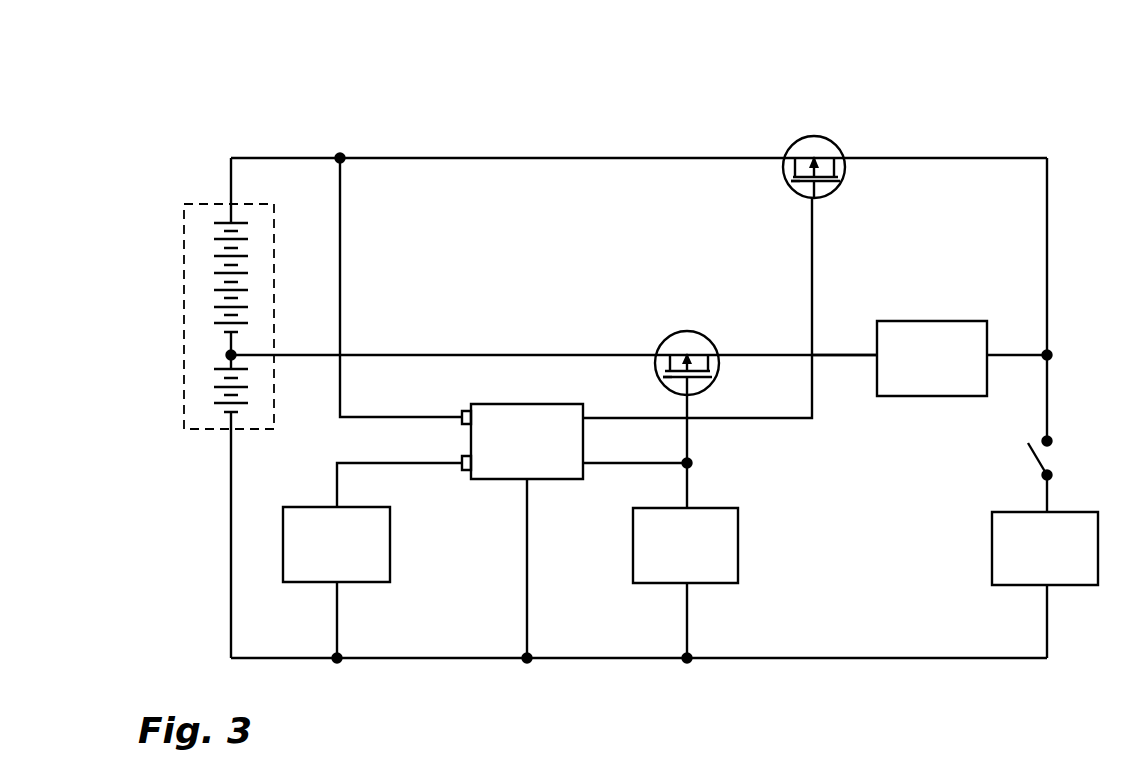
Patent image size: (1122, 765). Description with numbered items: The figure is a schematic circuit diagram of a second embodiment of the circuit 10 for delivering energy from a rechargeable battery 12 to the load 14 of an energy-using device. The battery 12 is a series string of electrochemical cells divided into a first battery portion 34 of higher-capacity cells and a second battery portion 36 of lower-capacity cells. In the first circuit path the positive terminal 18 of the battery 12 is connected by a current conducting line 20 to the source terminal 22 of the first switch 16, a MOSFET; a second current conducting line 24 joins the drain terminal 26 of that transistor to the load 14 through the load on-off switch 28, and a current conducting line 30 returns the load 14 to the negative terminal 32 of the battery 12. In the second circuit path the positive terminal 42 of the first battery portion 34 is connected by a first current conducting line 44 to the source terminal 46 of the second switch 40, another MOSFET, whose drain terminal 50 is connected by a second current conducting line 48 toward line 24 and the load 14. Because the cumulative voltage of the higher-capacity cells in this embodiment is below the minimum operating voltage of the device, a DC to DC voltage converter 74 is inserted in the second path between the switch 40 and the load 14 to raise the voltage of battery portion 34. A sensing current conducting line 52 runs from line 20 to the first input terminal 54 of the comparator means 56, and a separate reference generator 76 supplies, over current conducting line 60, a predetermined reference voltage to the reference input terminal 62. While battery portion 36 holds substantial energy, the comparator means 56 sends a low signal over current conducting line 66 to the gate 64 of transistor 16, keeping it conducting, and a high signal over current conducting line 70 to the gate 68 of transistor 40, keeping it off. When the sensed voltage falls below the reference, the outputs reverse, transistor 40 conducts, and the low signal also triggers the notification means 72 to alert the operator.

The circuit 10 is at (593, 117).
The rechargeable battery 12 is at (187, 203).
The load 14 is at (1098, 512).
The first switch 16 is at (819, 138).
The positive terminal 18 is at (229, 202).
The current conducting line 20 is at (440, 158).
The source terminal 22 is at (790, 150).
The second current conducting line 24 is at (1048, 246).
The drain terminal 26 is at (841, 159).
The load on-off switch 28 is at (1035, 459).
The current conducting line 30 is at (588, 660).
The negative terminal 32 is at (229, 430).
The first battery portion 34 is at (212, 400).
The second battery portion 36 is at (206, 276).
The second switch 40 is at (688, 333).
The positive terminal 42 is at (211, 372).
The first current conducting line 44 is at (400, 355).
The source terminal 46 is at (669, 356).
The second current conducting line 48 is at (839, 353).
The drain terminal 50 is at (714, 352).
The current conducting line 52 is at (342, 255).
The first input terminal 54 is at (458, 410).
The comparator means 56 is at (582, 405).
The current conducting line 60 is at (337, 474).
The reference input terminal 62 is at (464, 471).
The gate 64 is at (826, 185).
The current conducting line 66 is at (814, 418).
The gate 68 is at (669, 378).
The current conducting line 70 is at (689, 443).
The notification means 72 is at (738, 508).
The DC to DC voltage converter 74 is at (987, 321).
The reference generator 76 is at (283, 507).